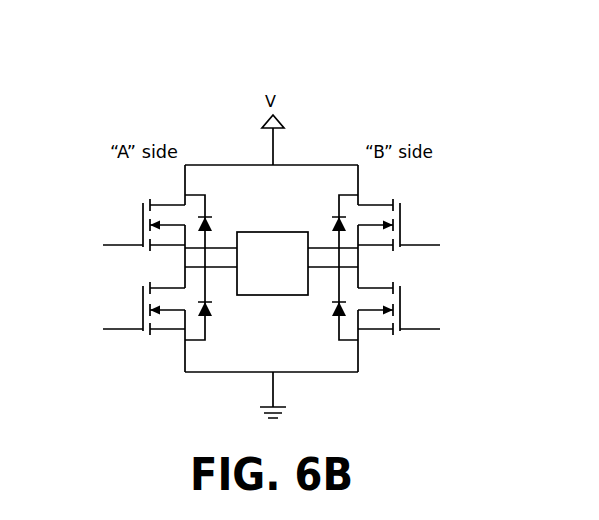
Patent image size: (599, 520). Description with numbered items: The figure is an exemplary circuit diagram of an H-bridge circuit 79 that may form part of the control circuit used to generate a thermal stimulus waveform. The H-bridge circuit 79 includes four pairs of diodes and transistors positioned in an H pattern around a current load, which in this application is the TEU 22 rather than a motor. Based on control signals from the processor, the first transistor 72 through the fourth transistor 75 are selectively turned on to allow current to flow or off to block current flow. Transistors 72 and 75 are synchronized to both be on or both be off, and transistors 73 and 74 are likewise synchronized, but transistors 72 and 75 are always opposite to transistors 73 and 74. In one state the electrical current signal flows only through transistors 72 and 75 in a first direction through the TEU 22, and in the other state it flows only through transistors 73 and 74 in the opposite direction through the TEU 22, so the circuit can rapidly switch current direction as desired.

The H-bridge circuit 79 is at (226, 84).
The TEU 22 is at (272, 263).
The transistor Q1 72 is at (143, 230).
The transistor Q2 73 is at (143, 318).
The transistor Q3 74 is at (400, 230).
The transistor Q4 75 is at (400, 318).